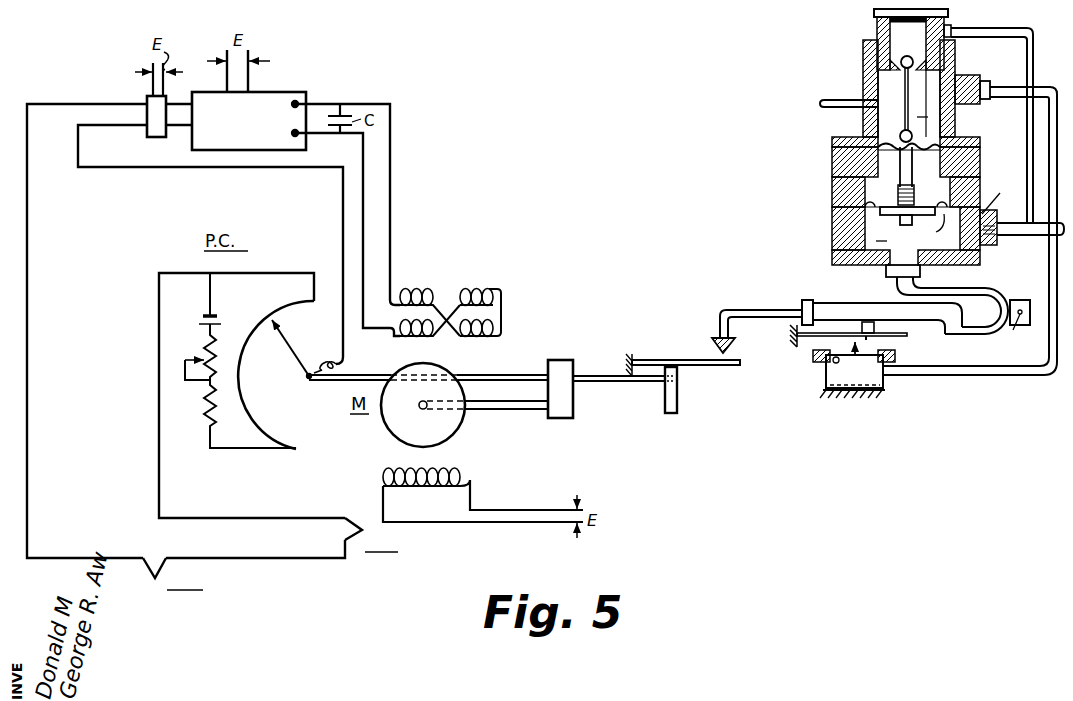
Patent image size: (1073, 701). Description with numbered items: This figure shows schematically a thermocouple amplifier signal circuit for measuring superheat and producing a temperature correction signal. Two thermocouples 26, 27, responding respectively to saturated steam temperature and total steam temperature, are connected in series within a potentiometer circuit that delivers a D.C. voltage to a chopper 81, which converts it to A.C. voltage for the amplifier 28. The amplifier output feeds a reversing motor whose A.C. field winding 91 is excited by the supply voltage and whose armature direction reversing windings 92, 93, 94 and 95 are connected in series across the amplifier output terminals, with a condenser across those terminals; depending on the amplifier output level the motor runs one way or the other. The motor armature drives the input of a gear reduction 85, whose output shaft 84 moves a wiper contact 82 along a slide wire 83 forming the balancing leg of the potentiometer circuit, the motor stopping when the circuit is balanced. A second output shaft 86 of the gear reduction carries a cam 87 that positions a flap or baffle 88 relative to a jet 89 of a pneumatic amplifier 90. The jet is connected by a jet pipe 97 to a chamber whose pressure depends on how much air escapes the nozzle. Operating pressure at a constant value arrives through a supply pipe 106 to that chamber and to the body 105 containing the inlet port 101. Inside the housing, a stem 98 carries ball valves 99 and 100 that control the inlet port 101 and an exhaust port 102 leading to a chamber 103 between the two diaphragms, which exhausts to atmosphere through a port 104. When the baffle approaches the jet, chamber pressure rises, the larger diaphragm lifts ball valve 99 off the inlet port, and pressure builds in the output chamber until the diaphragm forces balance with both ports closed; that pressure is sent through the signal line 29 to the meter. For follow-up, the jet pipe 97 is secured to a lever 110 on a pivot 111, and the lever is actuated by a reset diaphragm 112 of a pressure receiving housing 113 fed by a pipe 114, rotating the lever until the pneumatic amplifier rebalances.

The thermocouple 26 is at (360, 522).
The thermocouple 27 is at (145, 570).
The amplifier 28 is at (252, 129).
The signal line 29 is at (830, 99).
The chopper 81 is at (150, 135).
The wiper contact 82 is at (296, 352).
The slide wire 83 is at (245, 410).
The output shaft 84 is at (518, 375).
The gear reduction 85 is at (564, 416).
The output shaft 86 is at (612, 375).
The cam 87 is at (672, 398).
The flap or baffle 88 is at (700, 358).
The jet 89 is at (738, 347).
The pneumatic amplifier 90 is at (909, 137).
The A.C. field winding 91 is at (450, 478).
The armature direction reversing winding 92 is at (430, 288).
The armature direction reversing winding 93 is at (470, 337).
The armature direction reversing winding 94 is at (480, 288).
The armature direction reversing winding 95 is at (399, 337).
The jet pipe 97 is at (770, 310).
The stem 98 is at (894, 99).
The ball valve 99 is at (914, 50).
The ball valve 100 is at (912, 138).
The inlet port 101 is at (930, 103).
The exhaust port 102 is at (905, 155).
The chamber 103 is at (906, 186).
The port 104 is at (832, 180).
The body 105 is at (877, 27).
The supply pipe 106 is at (1040, 236).
The lever 110 is at (950, 330).
The pivot 111 is at (1012, 333).
The reset diaphragm 112 is at (826, 366).
The pressure receiving housing 113 is at (885, 388).
The pipe 114 is at (1010, 380).